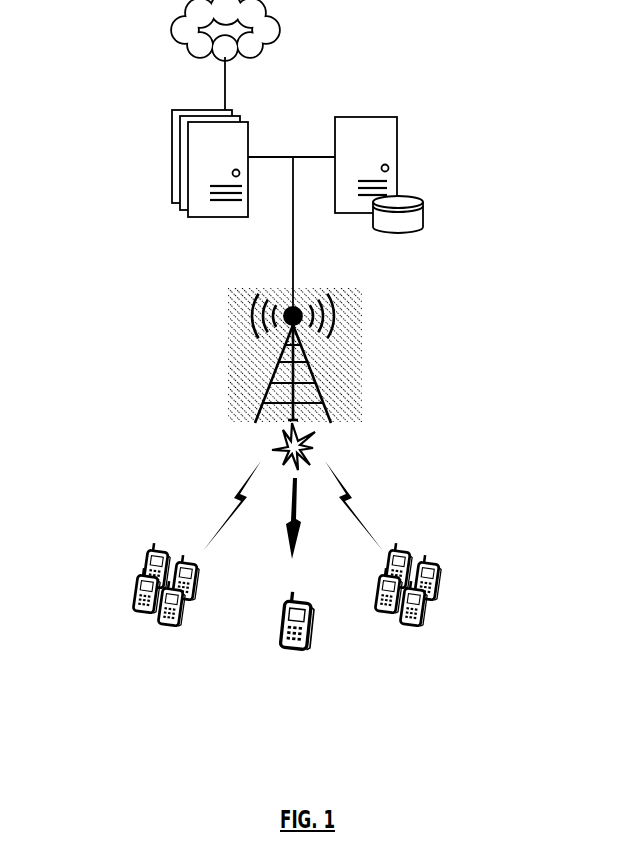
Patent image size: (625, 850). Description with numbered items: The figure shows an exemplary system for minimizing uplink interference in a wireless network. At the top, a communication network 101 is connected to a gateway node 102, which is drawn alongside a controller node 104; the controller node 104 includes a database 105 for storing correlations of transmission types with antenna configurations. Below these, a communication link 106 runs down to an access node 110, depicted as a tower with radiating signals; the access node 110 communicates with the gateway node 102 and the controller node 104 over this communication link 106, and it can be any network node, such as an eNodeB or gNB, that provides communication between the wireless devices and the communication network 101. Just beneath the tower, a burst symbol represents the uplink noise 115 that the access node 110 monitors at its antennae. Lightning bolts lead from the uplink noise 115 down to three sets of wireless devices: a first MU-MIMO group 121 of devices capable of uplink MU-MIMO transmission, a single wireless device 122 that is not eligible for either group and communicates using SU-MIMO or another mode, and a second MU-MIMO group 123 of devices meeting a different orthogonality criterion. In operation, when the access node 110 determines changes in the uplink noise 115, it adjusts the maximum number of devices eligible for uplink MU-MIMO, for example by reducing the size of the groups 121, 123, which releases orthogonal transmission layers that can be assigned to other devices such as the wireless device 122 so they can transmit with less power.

The communication network 101 is at (240, 38).
The gateway node 102 is at (190, 110).
The controller node 104 is at (395, 117).
The database 105 is at (420, 200).
The communication link 106 is at (292, 253).
The access node 110 is at (273, 375).
The uplink noise 115 is at (275, 448).
The first MU-MIMO group 121 is at (127, 631).
The wireless device 122 is at (289, 638).
The second MU-MIMO group 123 is at (460, 631).